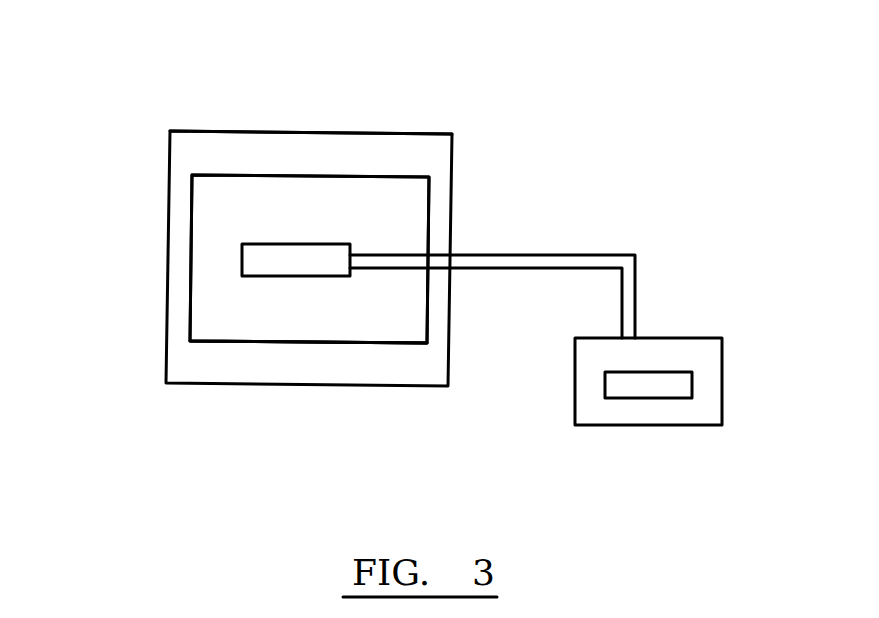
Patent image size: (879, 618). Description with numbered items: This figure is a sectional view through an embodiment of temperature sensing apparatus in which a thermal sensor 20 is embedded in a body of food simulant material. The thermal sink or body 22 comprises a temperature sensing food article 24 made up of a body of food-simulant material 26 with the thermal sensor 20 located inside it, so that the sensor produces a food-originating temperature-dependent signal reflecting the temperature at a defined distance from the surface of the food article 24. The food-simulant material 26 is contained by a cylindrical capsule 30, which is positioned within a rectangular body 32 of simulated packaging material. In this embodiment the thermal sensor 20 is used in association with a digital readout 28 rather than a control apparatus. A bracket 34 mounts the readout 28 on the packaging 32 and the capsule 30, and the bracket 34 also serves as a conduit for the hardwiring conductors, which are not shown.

The thermal sensor 20 is at (263, 257).
The thermal sink or body 22 is at (303, 190).
The temperature sensing food article 24 is at (441, 128).
The body of food-simulant material 26 is at (213, 287).
The digital readout 28 is at (712, 352).
The cylindrical capsule 30 is at (317, 344).
The rectangular body of simulated packaging material 32 is at (338, 133).
The bracket 34 is at (550, 257).